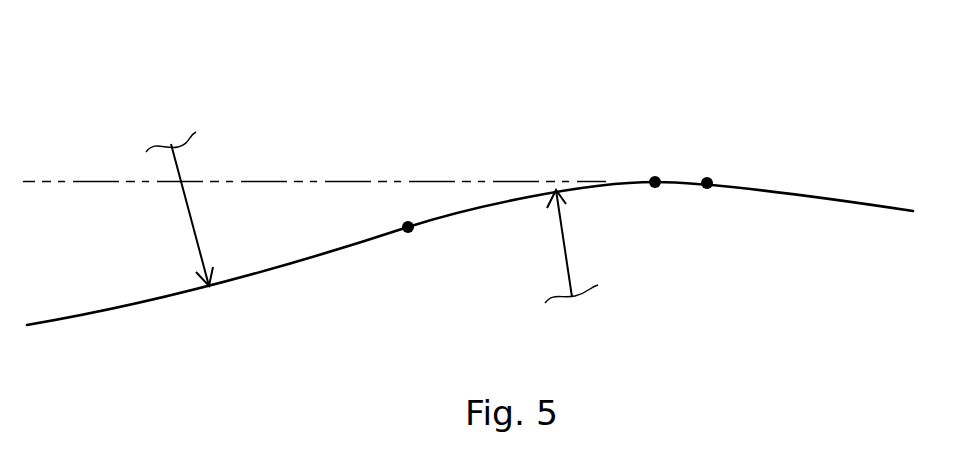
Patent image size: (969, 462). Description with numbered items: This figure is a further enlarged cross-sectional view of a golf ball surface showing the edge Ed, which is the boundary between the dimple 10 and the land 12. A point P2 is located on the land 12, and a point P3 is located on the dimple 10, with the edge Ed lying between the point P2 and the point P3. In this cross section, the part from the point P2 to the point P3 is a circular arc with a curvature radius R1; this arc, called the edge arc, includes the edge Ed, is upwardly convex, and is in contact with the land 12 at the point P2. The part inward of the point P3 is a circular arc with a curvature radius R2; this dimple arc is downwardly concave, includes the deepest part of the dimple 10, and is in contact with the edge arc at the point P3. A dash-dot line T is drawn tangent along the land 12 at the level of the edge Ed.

The dimple 10 is at (280, 265).
The land 12 is at (861, 200).
The tangent line T is at (105, 180).
The point P3 is at (408, 222).
The edge Ed is at (655, 178).
The point P2 is at (707, 178).
The curvature radius R1 is at (579, 246).
The curvature radius R2 is at (191, 209).